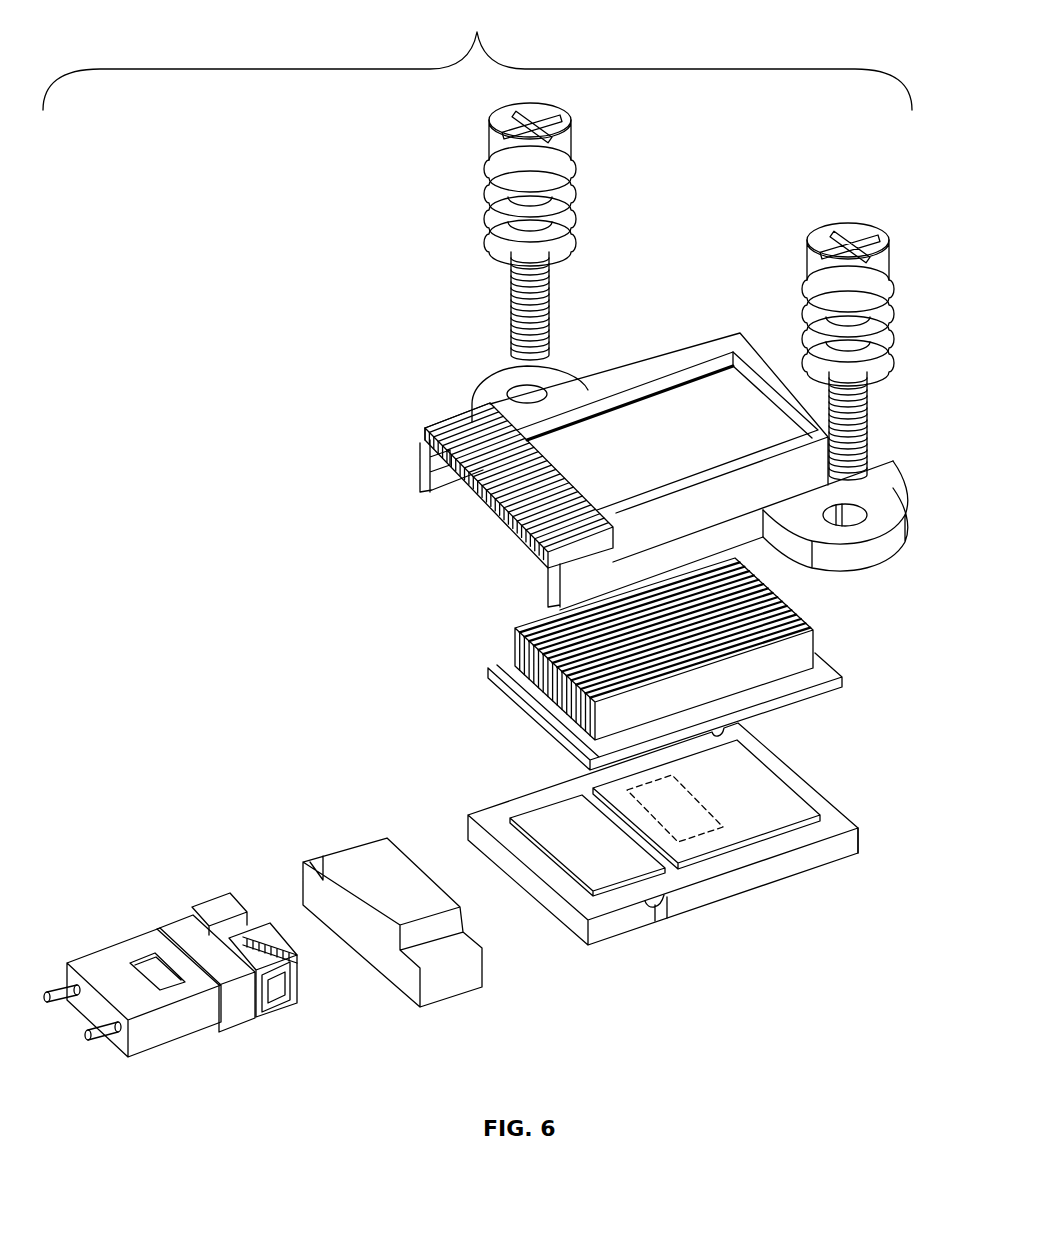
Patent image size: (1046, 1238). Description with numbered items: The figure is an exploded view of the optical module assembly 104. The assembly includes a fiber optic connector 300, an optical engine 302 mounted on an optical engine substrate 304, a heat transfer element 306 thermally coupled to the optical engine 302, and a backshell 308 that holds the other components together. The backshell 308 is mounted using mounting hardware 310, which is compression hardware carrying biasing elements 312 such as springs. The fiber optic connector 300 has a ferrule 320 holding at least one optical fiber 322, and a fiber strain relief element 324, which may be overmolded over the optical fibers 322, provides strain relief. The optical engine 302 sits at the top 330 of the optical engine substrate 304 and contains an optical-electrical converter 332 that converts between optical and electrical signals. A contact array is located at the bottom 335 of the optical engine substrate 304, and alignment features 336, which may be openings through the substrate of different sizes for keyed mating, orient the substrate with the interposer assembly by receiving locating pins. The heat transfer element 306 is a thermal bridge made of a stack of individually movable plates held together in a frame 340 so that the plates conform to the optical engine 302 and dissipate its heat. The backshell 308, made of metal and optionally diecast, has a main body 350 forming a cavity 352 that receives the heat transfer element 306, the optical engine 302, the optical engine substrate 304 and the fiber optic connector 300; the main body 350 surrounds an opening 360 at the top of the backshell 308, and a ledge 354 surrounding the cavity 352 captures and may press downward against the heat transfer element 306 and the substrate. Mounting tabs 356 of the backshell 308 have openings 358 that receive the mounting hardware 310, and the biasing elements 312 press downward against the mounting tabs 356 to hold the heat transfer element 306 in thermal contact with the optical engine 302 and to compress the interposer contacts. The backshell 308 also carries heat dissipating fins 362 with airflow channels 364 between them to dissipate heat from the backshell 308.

The optical module assembly 104 is at (280, 406).
The fiber optic connector 300 is at (170, 1015).
The optical engine 302 is at (752, 790).
The optical engine substrate 304 is at (674, 850).
The heat transfer element 306 is at (832, 628).
The backshell 308 is at (642, 433).
The mounting hardware 310 is at (480, 130).
The biasing elements 312 is at (505, 228).
The ferrule 320 is at (147, 946).
The optical fiber 322 is at (262, 937).
The fiber strain relief element 324 is at (380, 850).
The top 330 is at (833, 826).
The optical-electrical converter 332 is at (707, 828).
The bottom 335 is at (835, 862).
The alignment features 336 is at (735, 725).
The frame 340 is at (535, 697).
The main body 350 is at (668, 362).
The cavity 352 is at (512, 505).
The ledge 354 is at (737, 350).
The mounting tabs 356 is at (890, 508).
The openings 358 is at (855, 505).
The opening 360 is at (632, 382).
The heat dissipating fins 362 is at (548, 540).
The airflow channels 364 is at (538, 530).